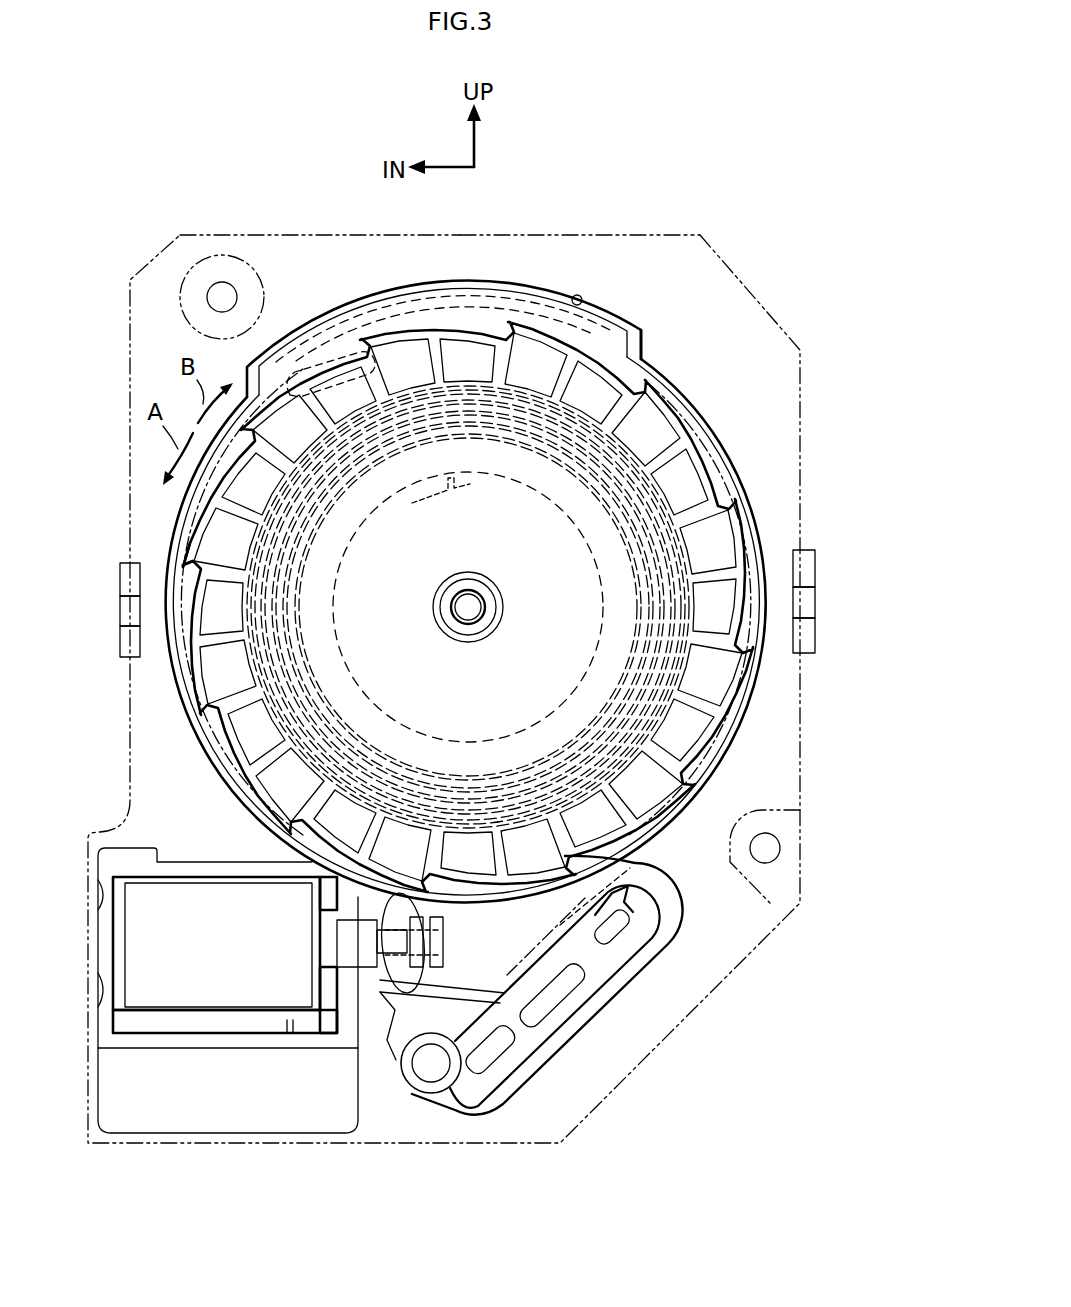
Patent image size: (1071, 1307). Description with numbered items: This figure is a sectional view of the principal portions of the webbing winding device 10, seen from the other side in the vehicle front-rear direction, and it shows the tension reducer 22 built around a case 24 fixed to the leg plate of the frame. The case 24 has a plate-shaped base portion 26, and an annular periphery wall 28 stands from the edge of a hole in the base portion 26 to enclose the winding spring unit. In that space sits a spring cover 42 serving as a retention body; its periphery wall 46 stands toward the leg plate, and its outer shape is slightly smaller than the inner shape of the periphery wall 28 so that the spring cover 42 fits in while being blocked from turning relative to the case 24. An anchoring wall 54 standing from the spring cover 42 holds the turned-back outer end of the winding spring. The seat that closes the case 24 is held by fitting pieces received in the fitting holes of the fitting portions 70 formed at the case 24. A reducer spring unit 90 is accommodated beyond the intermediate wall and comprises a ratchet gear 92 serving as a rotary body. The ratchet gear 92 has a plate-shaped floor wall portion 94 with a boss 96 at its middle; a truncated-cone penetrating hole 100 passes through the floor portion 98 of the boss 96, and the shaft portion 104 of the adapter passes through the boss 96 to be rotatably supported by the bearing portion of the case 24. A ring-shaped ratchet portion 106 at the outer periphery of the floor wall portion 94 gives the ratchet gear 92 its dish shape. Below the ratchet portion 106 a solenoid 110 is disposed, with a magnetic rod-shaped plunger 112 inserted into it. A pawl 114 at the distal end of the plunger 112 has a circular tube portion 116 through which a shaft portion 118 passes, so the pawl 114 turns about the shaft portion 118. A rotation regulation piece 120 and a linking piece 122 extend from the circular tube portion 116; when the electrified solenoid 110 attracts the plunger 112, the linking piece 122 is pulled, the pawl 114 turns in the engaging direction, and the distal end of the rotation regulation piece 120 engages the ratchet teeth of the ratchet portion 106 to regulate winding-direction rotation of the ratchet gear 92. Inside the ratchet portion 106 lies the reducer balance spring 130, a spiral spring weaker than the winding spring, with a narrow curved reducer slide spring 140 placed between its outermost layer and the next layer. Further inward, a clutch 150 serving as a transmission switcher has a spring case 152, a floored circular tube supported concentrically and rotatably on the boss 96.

The webbing winding device 10 is at (445, 623).
The tension reducer 22 is at (724, 172).
The case 24 is at (545, 233).
The base portion 26 is at (318, 233).
The periphery wall 28 is at (607, 328).
The spring cover 42 is at (630, 322).
The periphery wall 46 is at (538, 294).
The anchoring wall 54 is at (334, 343).
The fitting portions 70 is at (118, 583).
The reducer spring unit 90 is at (706, 452).
The ratchet gear 92 is at (207, 680).
The floor wall portion 94 is at (603, 690).
The boss 96 is at (505, 597).
The floor portion 98 is at (490, 613).
The penetrating hole 100 is at (460, 593).
The shaft portion 104 is at (470, 622).
The ratchet portion 106 is at (190, 537).
The solenoid 110 is at (200, 990).
The plunger 112 is at (387, 940).
The pawl 114 is at (510, 1072).
The circular tube portion 116 is at (410, 1094).
The shaft portion 118 is at (431, 1070).
The rotation regulation piece 120 is at (587, 997).
The linking piece 122 is at (422, 978).
The reducer balance spring 130 is at (320, 690).
The reducer slide spring 140 is at (368, 490).
The clutch 150 is at (578, 522).
The spring case 152 is at (300, 735).